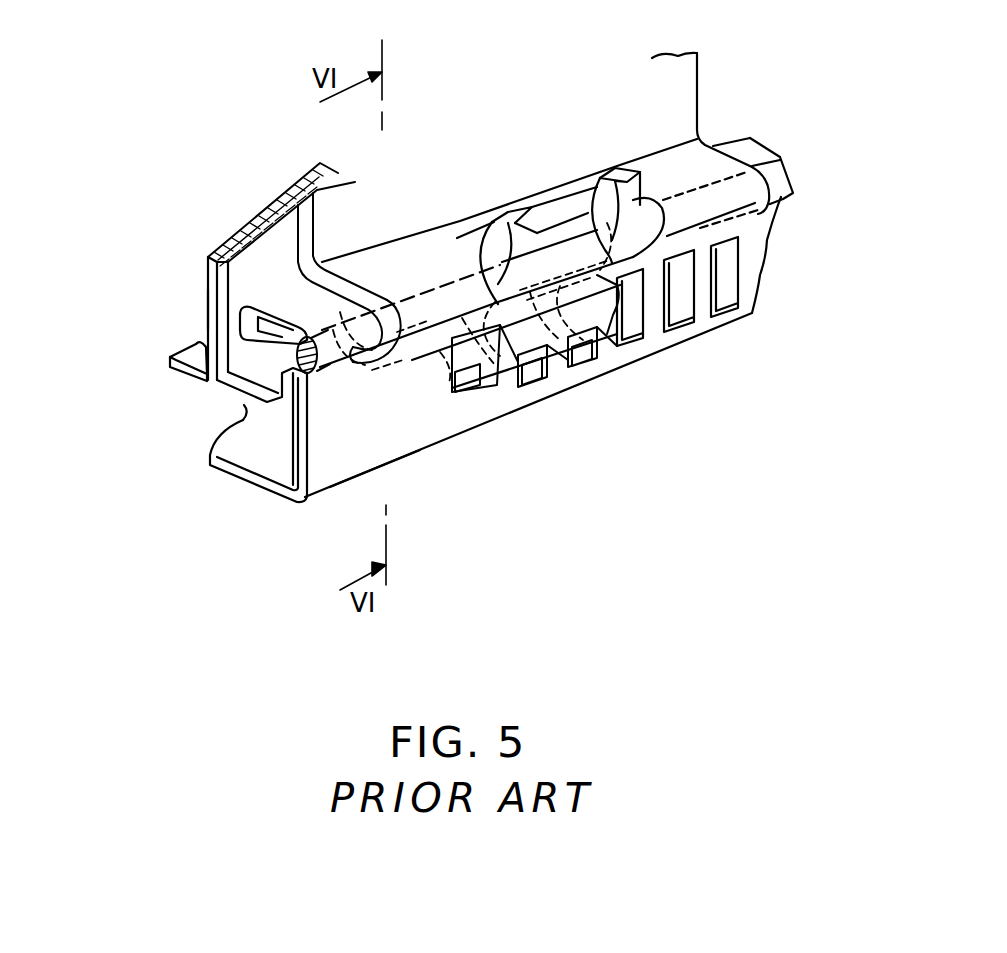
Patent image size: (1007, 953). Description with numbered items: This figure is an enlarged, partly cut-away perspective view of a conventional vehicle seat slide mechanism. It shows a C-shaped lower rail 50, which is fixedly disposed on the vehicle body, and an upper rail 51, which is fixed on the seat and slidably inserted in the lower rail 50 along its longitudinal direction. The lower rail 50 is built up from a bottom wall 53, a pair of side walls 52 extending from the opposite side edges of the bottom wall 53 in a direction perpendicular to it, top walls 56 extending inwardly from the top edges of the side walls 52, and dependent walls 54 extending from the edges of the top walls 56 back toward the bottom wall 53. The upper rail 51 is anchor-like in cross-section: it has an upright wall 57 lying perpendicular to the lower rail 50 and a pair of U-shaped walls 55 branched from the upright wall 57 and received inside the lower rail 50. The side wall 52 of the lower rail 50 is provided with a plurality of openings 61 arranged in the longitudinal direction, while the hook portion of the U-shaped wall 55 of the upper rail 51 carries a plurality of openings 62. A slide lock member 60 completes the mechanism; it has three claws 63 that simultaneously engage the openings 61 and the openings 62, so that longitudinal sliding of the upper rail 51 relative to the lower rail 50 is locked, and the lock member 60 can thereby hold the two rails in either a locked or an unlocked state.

The lower rail 50 is at (412, 462).
The upper rail 51 is at (205, 313).
The side wall 52 is at (330, 470).
The bottom wall 53 is at (248, 487).
The dependent wall 54 is at (225, 282).
The U-shaped wall 55 is at (243, 397).
The top wall 56 is at (290, 300).
The upright wall 57 is at (286, 237).
The slide lock member 60 is at (549, 275).
The openings 61 is at (558, 362).
The openings 62 is at (440, 310).
The claws 63 is at (503, 385).